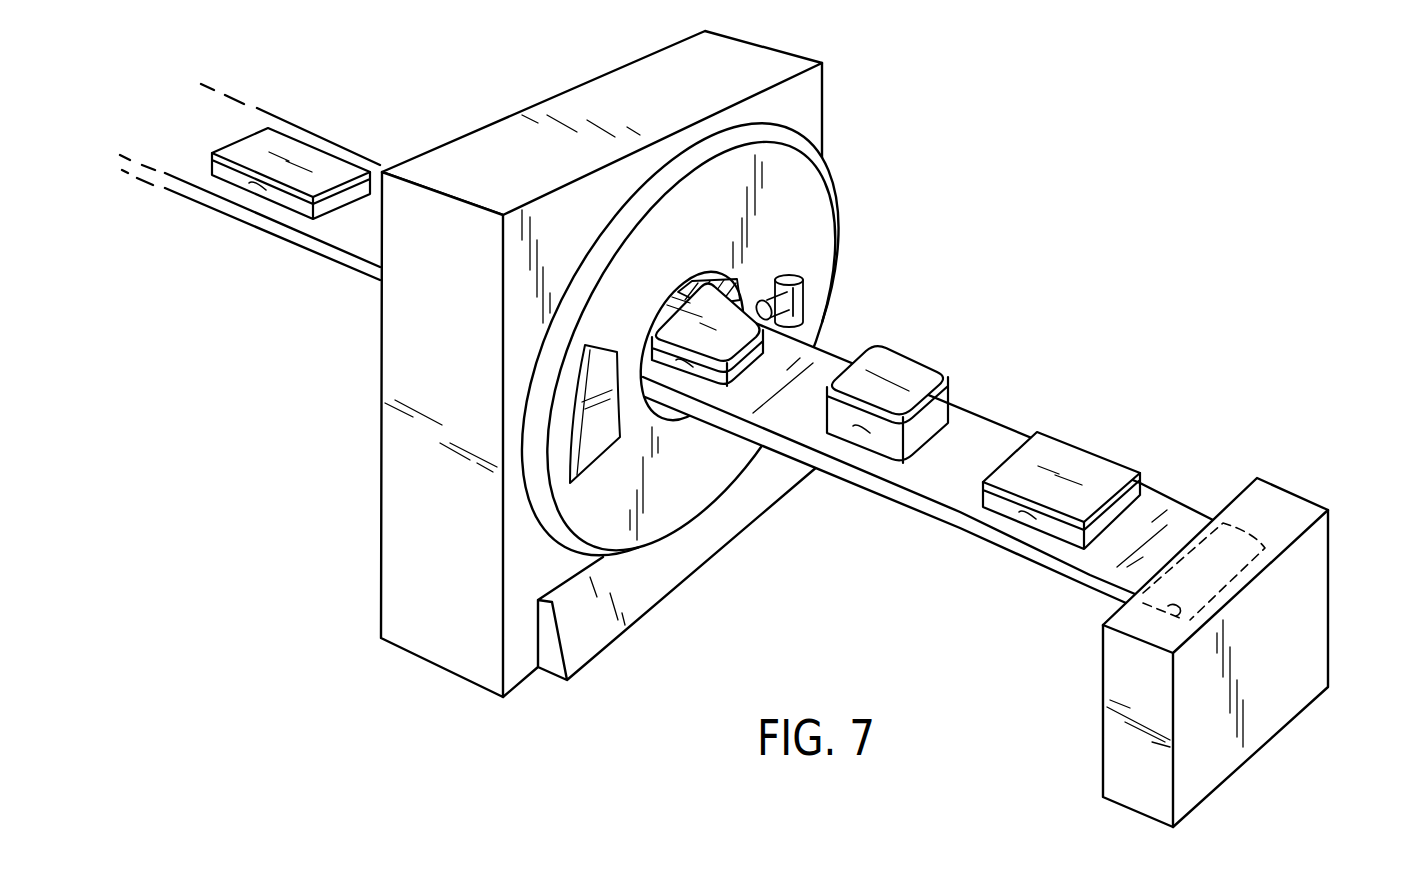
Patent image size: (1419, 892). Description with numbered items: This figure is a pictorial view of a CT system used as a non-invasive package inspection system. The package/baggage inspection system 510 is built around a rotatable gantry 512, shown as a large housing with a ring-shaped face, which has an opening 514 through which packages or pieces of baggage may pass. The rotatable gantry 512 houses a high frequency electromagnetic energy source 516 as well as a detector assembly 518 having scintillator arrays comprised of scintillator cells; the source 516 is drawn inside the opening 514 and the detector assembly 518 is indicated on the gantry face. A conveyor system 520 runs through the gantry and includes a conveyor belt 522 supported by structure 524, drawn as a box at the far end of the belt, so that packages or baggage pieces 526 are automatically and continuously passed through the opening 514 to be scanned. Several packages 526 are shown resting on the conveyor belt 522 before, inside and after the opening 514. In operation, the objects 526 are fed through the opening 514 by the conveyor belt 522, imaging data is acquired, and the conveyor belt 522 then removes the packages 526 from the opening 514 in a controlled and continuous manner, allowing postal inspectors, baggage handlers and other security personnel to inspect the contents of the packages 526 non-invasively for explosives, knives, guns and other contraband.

The package/baggage inspection system 510 is at (1103, 227).
The rotatable gantry 512 is at (817, 210).
The opening 514 is at (717, 287).
The high frequency electromagnetic energy source 516 is at (803, 299).
The detector assembly 518 is at (590, 452).
The conveyor system 520 is at (726, 455).
The conveyor belt 522 is at (332, 235).
The structure 524 is at (1313, 612).
The packages or baggage pieces 526 is at (307, 155).